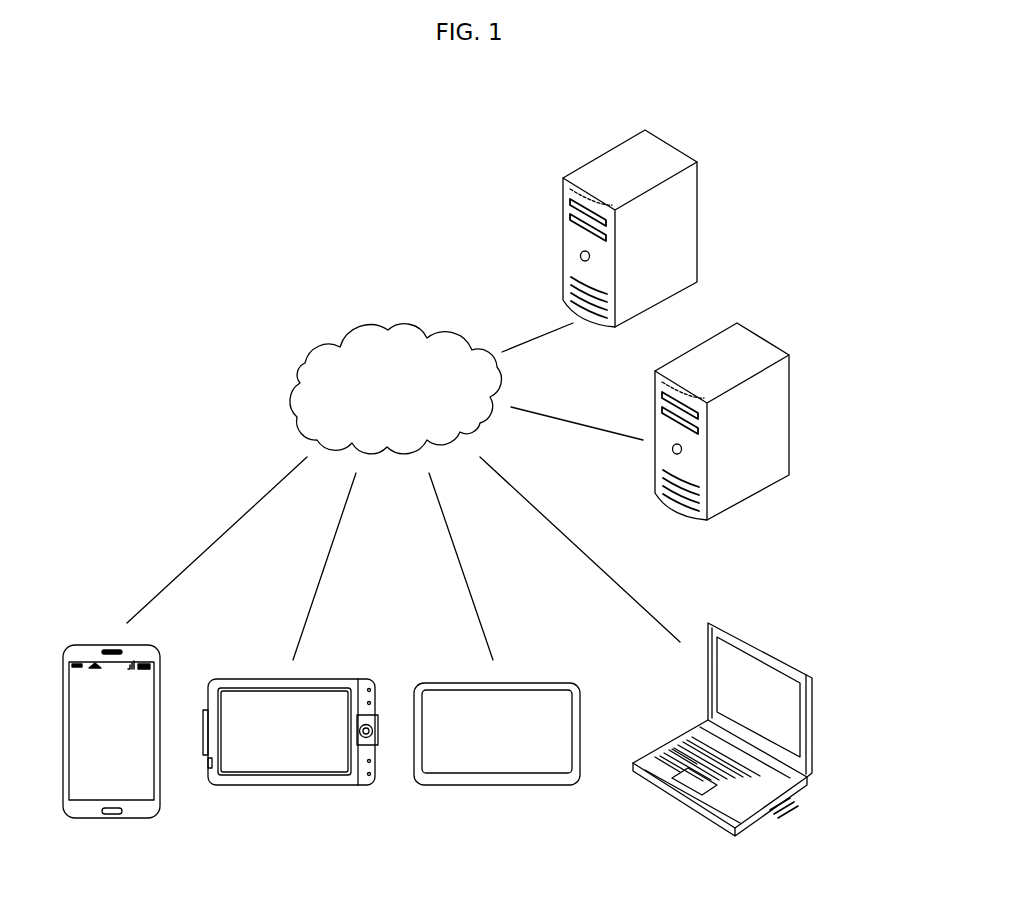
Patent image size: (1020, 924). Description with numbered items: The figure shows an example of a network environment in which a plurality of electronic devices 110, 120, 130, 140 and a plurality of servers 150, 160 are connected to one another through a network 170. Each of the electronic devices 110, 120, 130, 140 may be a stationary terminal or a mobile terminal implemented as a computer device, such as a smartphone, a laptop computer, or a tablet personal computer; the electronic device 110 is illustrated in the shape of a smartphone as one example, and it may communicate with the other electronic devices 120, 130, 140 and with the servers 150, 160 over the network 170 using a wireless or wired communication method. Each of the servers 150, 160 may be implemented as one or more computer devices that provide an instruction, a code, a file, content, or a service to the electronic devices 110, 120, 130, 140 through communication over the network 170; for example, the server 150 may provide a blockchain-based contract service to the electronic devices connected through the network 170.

The electronic device 110 is at (112, 819).
The electronic device 120 is at (292, 786).
The electronic device 130 is at (497, 786).
The electronic device 140 is at (812, 727).
The server 150 is at (788, 410).
The server 160 is at (697, 218).
The network 170 is at (400, 325).